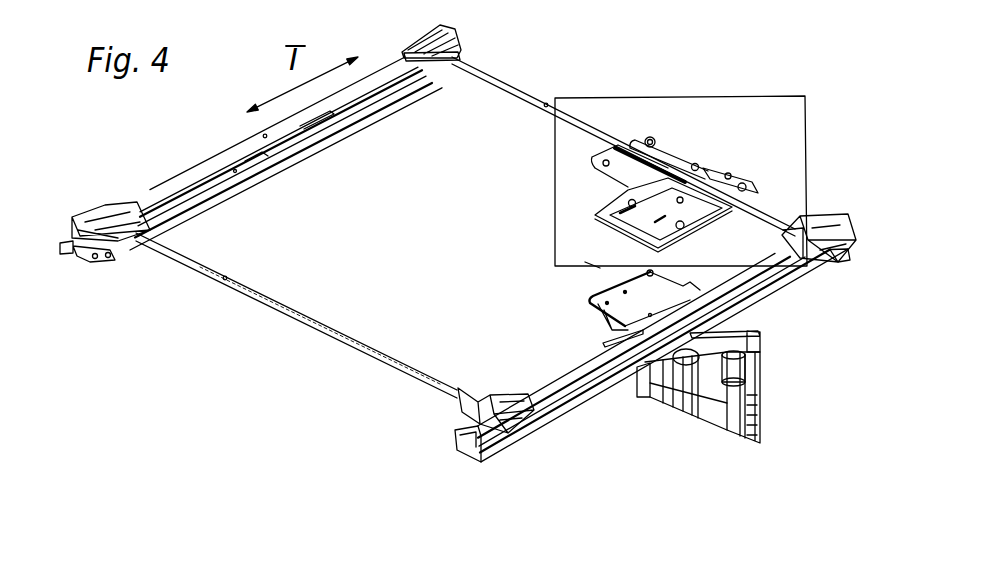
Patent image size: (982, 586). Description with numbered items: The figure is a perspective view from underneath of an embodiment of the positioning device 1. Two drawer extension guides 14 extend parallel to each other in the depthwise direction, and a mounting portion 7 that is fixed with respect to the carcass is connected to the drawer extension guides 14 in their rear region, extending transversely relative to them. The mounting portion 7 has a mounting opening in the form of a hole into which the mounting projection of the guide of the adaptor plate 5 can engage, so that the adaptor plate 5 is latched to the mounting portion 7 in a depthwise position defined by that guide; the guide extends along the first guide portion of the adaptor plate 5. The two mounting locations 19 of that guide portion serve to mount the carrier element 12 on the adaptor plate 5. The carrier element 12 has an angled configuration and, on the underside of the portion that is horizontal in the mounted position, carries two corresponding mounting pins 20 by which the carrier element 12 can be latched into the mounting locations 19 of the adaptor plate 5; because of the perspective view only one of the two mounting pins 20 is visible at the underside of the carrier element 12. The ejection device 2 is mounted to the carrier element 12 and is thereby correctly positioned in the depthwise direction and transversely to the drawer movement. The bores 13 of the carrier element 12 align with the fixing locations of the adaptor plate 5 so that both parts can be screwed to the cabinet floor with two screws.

The positioning device 1 is at (592, 87).
The ejection device 2 is at (777, 394).
The adaptor plate 5 is at (682, 140).
The mounting portion 7 is at (493, 75).
The carrier element 12 is at (623, 295).
The bores 13 is at (597, 310).
The drawer extension guides 14 is at (158, 174).
The mounting locations 19 is at (650, 137).
The mounting pins 20 is at (590, 266).